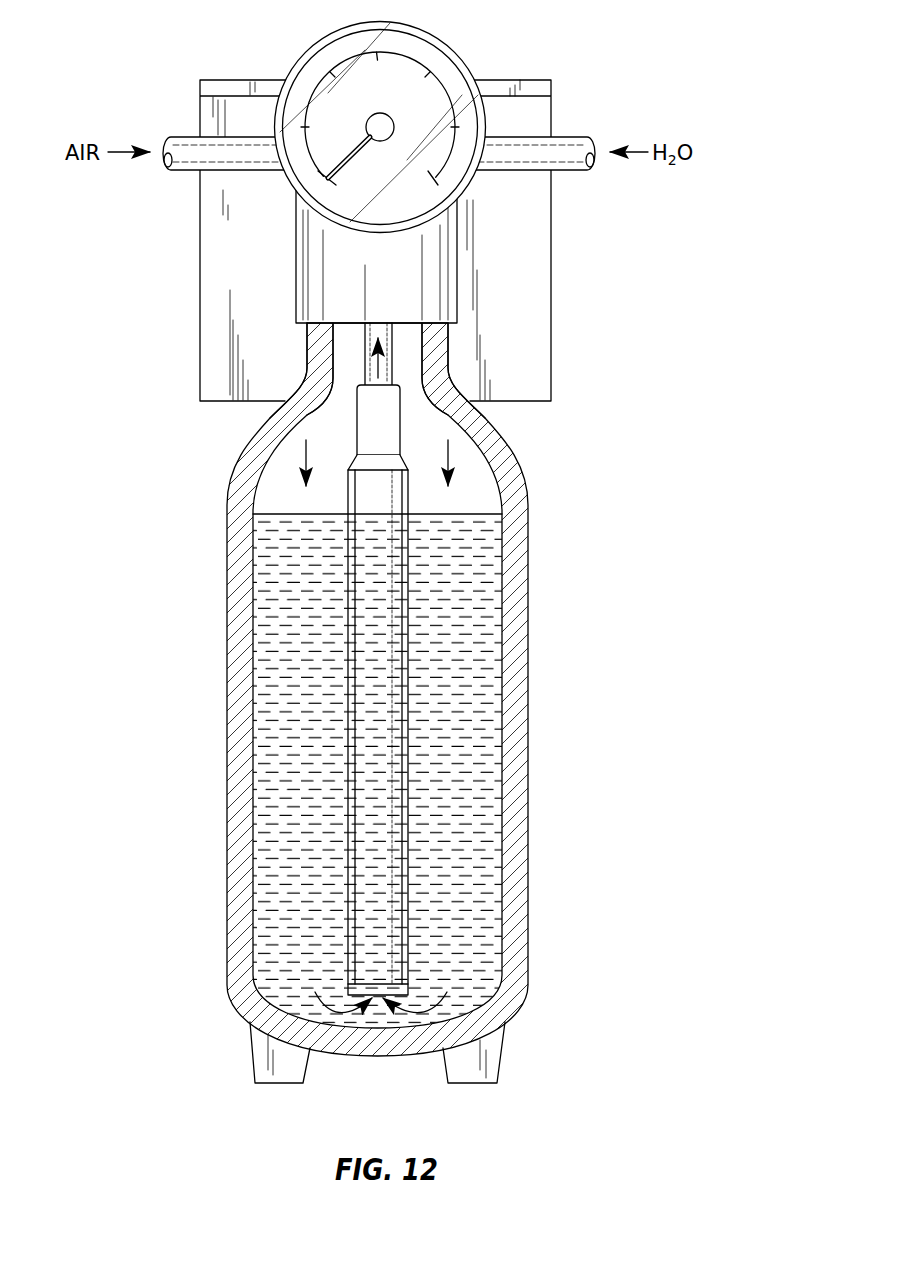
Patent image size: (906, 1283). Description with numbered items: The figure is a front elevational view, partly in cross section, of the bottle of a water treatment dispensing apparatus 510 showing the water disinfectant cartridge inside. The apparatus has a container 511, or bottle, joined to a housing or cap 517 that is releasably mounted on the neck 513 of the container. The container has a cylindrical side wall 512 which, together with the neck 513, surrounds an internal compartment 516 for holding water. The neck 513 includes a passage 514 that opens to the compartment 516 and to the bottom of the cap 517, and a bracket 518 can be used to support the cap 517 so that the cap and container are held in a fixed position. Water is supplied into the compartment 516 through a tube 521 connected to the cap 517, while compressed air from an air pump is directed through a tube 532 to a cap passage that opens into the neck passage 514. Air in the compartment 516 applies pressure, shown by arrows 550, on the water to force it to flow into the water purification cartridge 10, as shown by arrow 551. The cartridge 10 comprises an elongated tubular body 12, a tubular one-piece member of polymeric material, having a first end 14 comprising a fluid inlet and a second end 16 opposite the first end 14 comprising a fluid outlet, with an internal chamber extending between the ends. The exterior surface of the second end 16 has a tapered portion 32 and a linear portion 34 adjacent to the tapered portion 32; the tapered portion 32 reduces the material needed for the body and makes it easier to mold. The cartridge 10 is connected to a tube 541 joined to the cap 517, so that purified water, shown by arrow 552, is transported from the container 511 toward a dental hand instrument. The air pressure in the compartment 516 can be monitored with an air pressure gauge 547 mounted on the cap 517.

The cartridge 10 is at (412, 582).
The elongated tubular body 12 is at (408, 902).
The first end 14 is at (408, 973).
The second end 16 is at (345, 500).
The tapered portion 32 is at (410, 468).
The linear portion 34 is at (405, 450).
The water treatment dispensing apparatus 510 is at (653, 351).
The container 511 is at (531, 741).
The cylindrical side wall 512 is at (240, 613).
The neck 513 is at (327, 345).
The passage 514 is at (402, 342).
The internal compartment 516 is at (467, 615).
The cap 517 is at (291, 275).
The bracket 518 is at (213, 262).
The tube 521 is at (503, 154).
The tube 532 is at (192, 158).
The tube 541 is at (393, 380).
The air pressure gauge 547 is at (460, 54).
The arrows 550 is at (297, 455).
The arrow 551 is at (340, 1015).
The arrow 552 is at (385, 369).